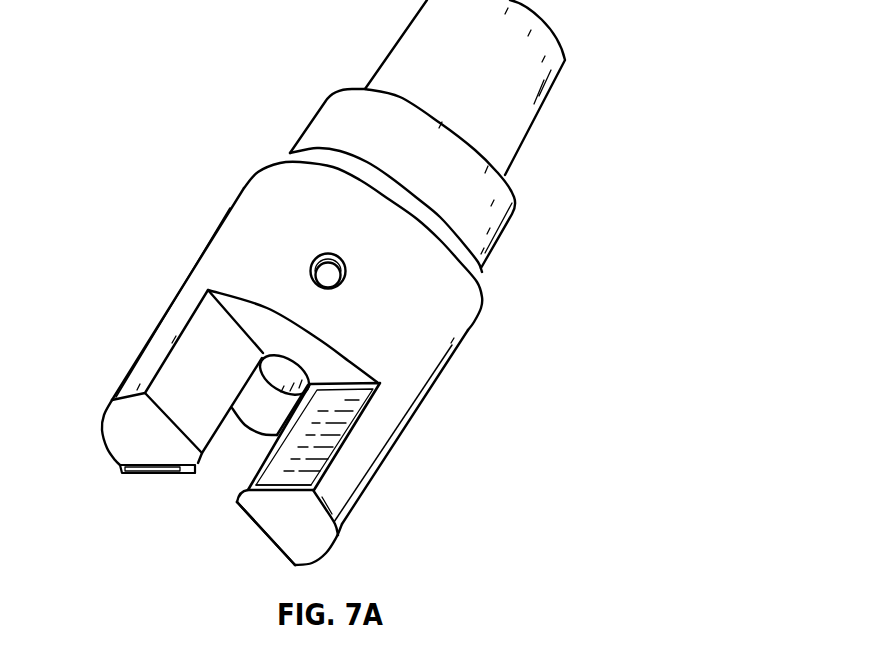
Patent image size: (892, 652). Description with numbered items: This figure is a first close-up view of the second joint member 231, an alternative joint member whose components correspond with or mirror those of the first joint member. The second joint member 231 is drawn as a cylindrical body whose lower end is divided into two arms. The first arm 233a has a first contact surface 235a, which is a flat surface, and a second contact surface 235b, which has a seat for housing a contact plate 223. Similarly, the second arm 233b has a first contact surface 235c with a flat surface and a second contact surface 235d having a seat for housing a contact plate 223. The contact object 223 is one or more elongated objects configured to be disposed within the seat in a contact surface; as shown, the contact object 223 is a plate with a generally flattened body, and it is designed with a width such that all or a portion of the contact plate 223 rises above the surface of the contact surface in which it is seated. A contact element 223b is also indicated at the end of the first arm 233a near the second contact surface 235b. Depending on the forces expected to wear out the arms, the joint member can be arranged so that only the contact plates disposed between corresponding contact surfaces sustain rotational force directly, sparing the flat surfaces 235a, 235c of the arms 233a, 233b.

The second joint member 231 is at (257, 201).
The first contact surface 235a is at (192, 348).
The first arm 233a is at (170, 338).
The second contact surface 235b is at (129, 479).
The second contact pad 223b is at (167, 477).
The second arm 233b is at (390, 402).
The contact object 223 is at (333, 423).
The second contact surface 235d is at (318, 473).
The first contact surface 235c is at (243, 530).